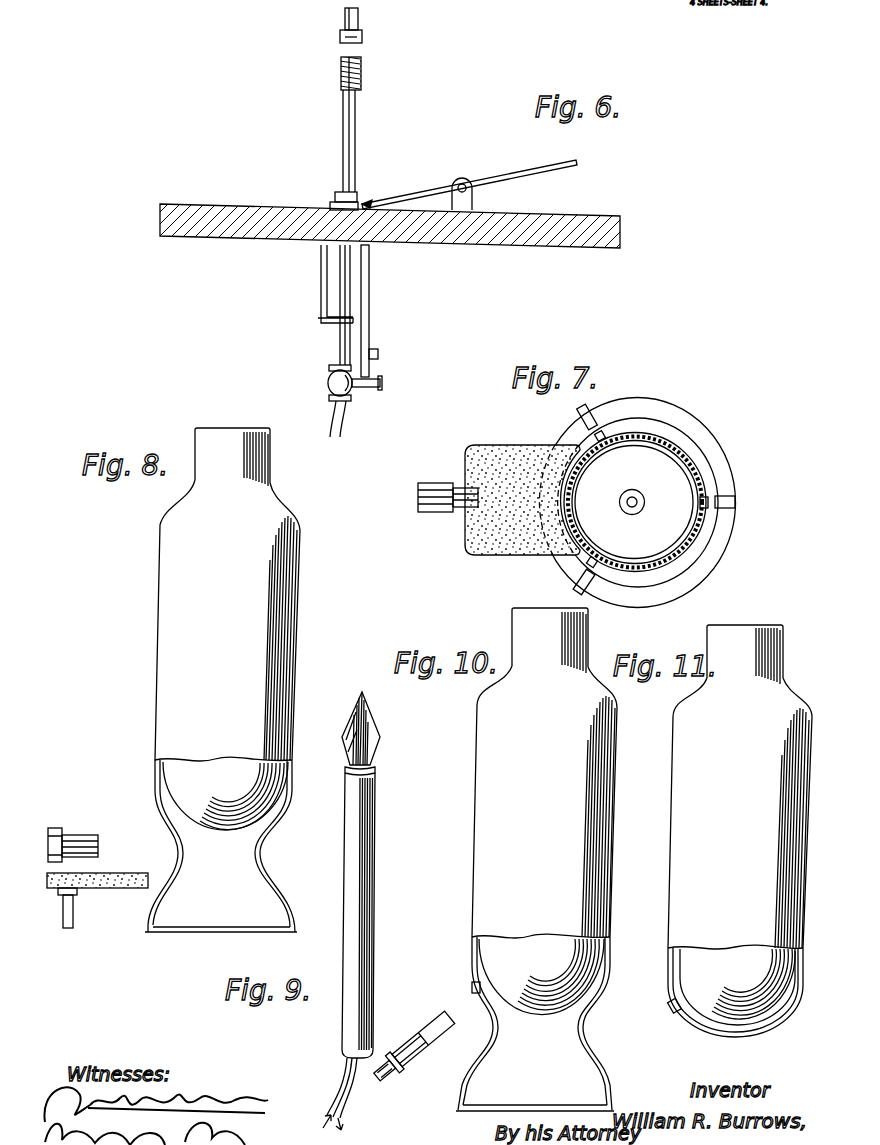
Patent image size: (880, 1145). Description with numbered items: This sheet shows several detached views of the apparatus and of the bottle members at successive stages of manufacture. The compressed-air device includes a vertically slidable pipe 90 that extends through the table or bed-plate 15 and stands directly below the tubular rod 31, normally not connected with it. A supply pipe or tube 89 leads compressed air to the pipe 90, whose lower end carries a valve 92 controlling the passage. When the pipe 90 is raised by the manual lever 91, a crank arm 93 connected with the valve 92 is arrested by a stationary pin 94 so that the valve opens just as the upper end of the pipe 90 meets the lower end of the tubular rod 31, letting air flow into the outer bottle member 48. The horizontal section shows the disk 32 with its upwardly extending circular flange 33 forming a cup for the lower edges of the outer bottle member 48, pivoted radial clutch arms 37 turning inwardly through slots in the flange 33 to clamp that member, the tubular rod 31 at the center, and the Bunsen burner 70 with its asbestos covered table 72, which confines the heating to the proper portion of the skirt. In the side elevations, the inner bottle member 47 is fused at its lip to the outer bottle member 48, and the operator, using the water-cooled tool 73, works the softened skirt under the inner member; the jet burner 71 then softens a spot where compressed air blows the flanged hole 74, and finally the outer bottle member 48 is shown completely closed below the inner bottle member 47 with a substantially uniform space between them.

In FIG. 6, the table or bed-plate 15 is at (390, 239).
In FIG. 6, the tubular rod 31 is at (369, 25).
In FIG. 7, the tubular rod 31 is at (645, 503).
In FIG. 7, the disk 32 is at (725, 548).
In FIG. 7, the circular flange 33 is at (700, 570).
In FIG. 7, the pivoted radial clutch arms 37 is at (597, 415).
In FIG. 8, the inner bottle member 47 is at (223, 793).
In FIG. 10, the inner bottle member 47 is at (541, 974).
In FIG. 11, the inner bottle member 47 is at (735, 985).
In FIG. 7, the outer bottle member 48 is at (682, 455).
In FIG. 8, the outer bottle member 48 is at (158, 703).
In FIG. 10, the outer bottle member 48 is at (527, 859).
In FIG. 11, the outer bottle member 48 is at (740, 831).
In FIG. 7, the Bunsen burner 70 is at (448, 484).
In FIG. 8, the Bunsen burner 70 is at (79, 834).
In FIG. 10, the auxiliary jet burner 71 is at (413, 1047).
In FIG. 7, the asbestos covered table 72 is at (522, 483).
In FIG. 8, the asbestos covered table 72 is at (140, 866).
In FIG. 9, the water-cooled tool 73 is at (370, 911).
In FIG. 10, the aperture or hole 74 is at (474, 984).
In FIG. 11, the aperture or hole 74 is at (670, 1008).
In FIG. 6, the pipe or tube 89 is at (343, 421).
In FIG. 6, the vertically slidable pipe 90 is at (352, 153).
In FIG. 6, the lever 91 is at (469, 185).
In FIG. 6, the valve 92 is at (328, 385).
In FIG. 6, the crank arm 93 is at (383, 383).
In FIG. 6, the stationary pin 94 is at (380, 356).